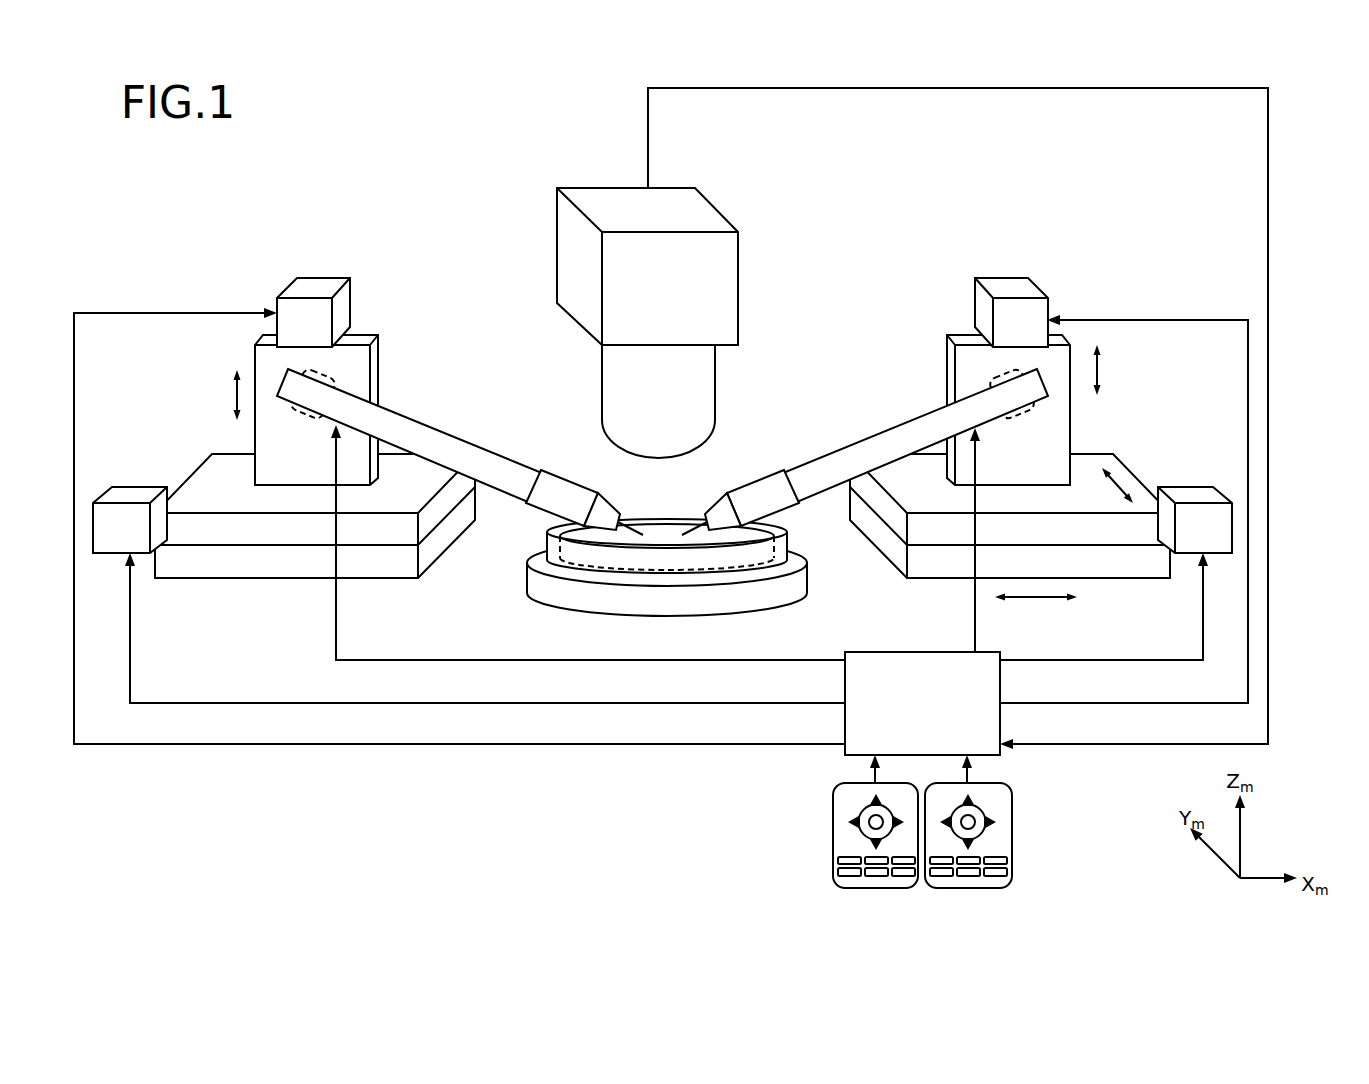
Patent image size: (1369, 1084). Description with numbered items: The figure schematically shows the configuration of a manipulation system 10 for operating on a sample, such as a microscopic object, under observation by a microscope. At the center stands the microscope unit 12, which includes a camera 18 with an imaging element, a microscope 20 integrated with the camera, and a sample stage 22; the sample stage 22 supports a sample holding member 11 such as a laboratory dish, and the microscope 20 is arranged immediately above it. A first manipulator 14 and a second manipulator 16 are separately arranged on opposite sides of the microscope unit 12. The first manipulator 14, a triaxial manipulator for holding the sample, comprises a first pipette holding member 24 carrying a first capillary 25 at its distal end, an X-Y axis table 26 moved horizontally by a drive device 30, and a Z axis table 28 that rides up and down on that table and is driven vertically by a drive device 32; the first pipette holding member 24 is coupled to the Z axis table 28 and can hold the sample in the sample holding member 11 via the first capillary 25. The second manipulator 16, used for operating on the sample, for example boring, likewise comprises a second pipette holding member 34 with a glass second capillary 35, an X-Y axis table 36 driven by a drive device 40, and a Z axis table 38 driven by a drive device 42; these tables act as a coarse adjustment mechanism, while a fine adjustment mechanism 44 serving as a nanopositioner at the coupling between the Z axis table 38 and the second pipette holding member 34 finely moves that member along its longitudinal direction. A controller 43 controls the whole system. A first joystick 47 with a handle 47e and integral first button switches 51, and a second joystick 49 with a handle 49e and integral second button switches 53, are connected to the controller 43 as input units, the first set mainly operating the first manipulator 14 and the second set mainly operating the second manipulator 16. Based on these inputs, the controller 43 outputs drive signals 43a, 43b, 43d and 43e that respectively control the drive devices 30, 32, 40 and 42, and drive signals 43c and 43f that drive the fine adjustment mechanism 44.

The manipulation system 10 is at (773, 154).
The sample holding member 11 is at (672, 565).
The microscope unit 12 is at (677, 290).
The first manipulator 14 is at (368, 435).
The second manipulator 16 is at (948, 418).
The camera 18 is at (742, 292).
The microscope 20 is at (716, 382).
The sample stage 22 is at (702, 617).
The first pipette holding member 24 is at (444, 451).
The first capillary 25 is at (635, 519).
The X-Y axis table 26 is at (259, 570).
The Z axis table 28 is at (362, 358).
The drive device 30 is at (134, 511).
The drive device 32 is at (356, 303).
The second pipette holding member 34 is at (831, 486).
The second capillary 35 is at (690, 520).
The X-Y axis table 36 is at (1115, 570).
The Z axis table 38 is at (1057, 416).
The drive device 40 is at (1205, 511).
The drive device 42 is at (1041, 306).
The controller 43 is at (845, 757).
The drive signal 43a is at (283, 703).
The drive signal 43b is at (283, 744).
The drive signal 43c is at (365, 660).
The drive signal 43d is at (1042, 661).
The drive signal 43e is at (1042, 703).
The drive signal 43f is at (974, 621).
The fine adjustment mechanism 44 is at (988, 370).
The first joystick 47 is at (841, 841).
The handle 47e is at (862, 830).
The second joystick 49 is at (1002, 841).
The handle 49e is at (982, 830).
The first button switches 51 is at (878, 877).
The second button switches 53 is at (970, 877).